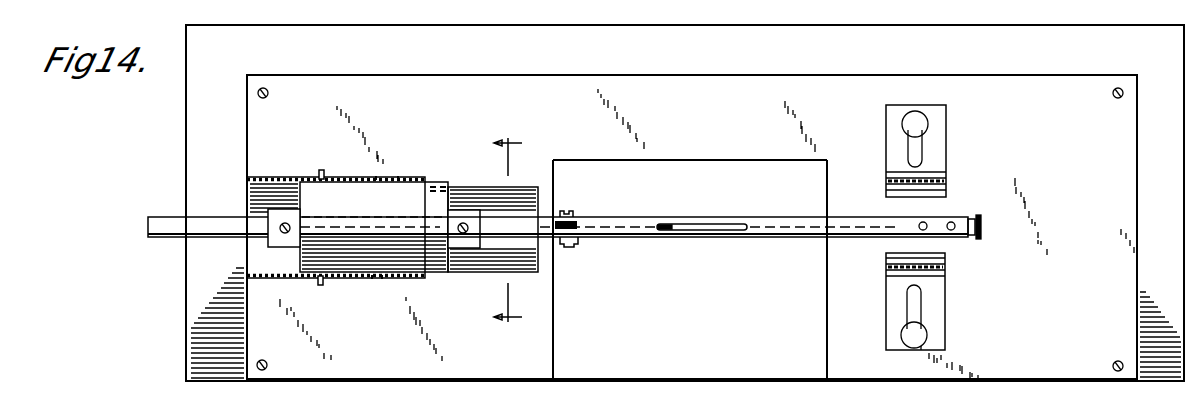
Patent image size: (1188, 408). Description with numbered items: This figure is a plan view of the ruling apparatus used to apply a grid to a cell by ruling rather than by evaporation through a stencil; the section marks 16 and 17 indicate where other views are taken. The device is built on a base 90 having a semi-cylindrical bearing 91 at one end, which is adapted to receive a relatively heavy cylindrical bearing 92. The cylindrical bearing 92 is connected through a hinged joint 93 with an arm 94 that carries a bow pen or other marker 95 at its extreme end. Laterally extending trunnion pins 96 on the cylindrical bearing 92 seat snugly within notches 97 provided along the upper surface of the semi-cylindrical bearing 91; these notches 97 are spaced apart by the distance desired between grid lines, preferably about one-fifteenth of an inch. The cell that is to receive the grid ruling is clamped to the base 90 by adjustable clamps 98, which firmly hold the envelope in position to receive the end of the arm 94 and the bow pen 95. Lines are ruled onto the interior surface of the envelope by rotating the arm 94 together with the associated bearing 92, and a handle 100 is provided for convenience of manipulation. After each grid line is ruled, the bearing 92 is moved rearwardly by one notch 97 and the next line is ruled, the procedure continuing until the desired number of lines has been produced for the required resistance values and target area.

The base 90 is at (378, 381).
The semi-cylindrical bearing 91 is at (290, 280).
The cylindrical bearing 92 is at (428, 262).
The hinged joint 93 is at (572, 248).
The arm 94 is at (792, 238).
The bow pen 95 is at (970, 237).
The trunnion pins 96 is at (321, 170).
The notches 97 is at (399, 177).
The adjustable clamps 98 is at (940, 158).
The handle 100 is at (706, 199).
The section line 16 is at (508, 234).
The outer frame / section 17 is at (685, 216).